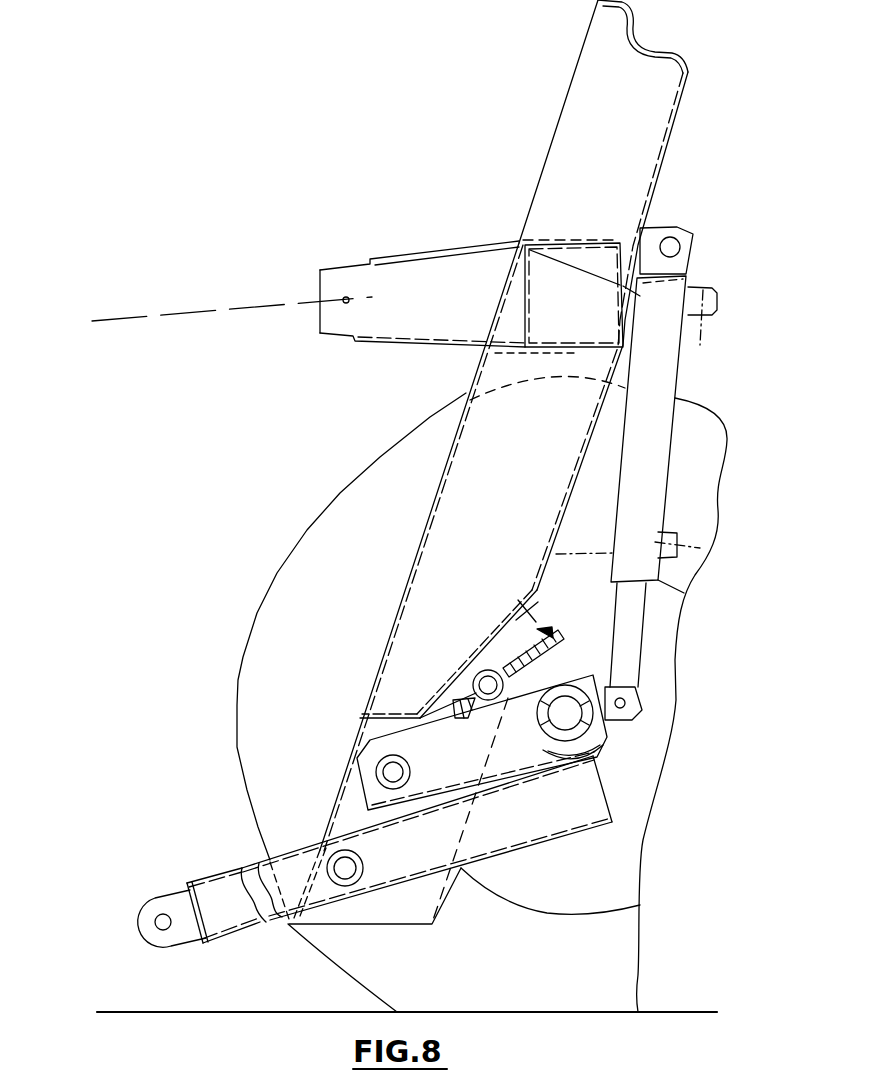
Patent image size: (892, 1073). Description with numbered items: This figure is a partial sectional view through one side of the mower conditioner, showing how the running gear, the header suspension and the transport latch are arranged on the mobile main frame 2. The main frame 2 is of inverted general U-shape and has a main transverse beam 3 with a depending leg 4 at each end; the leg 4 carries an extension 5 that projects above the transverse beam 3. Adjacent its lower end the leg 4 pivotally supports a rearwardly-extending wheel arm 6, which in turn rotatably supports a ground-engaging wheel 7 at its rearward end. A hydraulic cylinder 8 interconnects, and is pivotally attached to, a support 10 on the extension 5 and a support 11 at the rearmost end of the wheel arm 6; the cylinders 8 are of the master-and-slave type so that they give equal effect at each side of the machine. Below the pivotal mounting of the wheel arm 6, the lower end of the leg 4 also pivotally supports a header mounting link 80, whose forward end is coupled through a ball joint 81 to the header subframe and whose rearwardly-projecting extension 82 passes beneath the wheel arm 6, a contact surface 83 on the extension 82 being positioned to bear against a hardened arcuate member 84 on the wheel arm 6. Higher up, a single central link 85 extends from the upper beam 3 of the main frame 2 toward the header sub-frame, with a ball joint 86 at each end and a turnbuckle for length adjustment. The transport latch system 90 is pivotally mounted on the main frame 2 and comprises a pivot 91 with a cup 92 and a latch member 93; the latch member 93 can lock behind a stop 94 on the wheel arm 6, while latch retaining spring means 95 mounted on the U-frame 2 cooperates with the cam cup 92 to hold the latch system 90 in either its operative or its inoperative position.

The mobile main frame 2 is at (478, 367).
The main transverse beam 3 is at (622, 242).
The depending legs 4 is at (422, 518).
The extensions 5 is at (550, 150).
The wheel arms 6 is at (612, 680).
The ground-engaging wheel 7 is at (242, 761).
The hydraulic cylinders 8 is at (676, 384).
The supports 10 is at (648, 233).
The supports 11 is at (643, 712).
The header mounting links 80 is at (578, 835).
The ball joints 81 is at (165, 931).
The rearwardly-projecting extensions 82 is at (610, 832).
The contact surfaces 83 is at (605, 752).
The hardened arcuate members 84 is at (602, 740).
The central link 85 is at (168, 313).
The ball joint 86 is at (348, 296).
The transport latch system 90 is at (553, 632).
The pivots 91 is at (558, 680).
The cups 92 is at (472, 690).
The latch members 93 is at (557, 643).
The stops 94 is at (450, 700).
The latch retaining spring means 95 is at (538, 607).